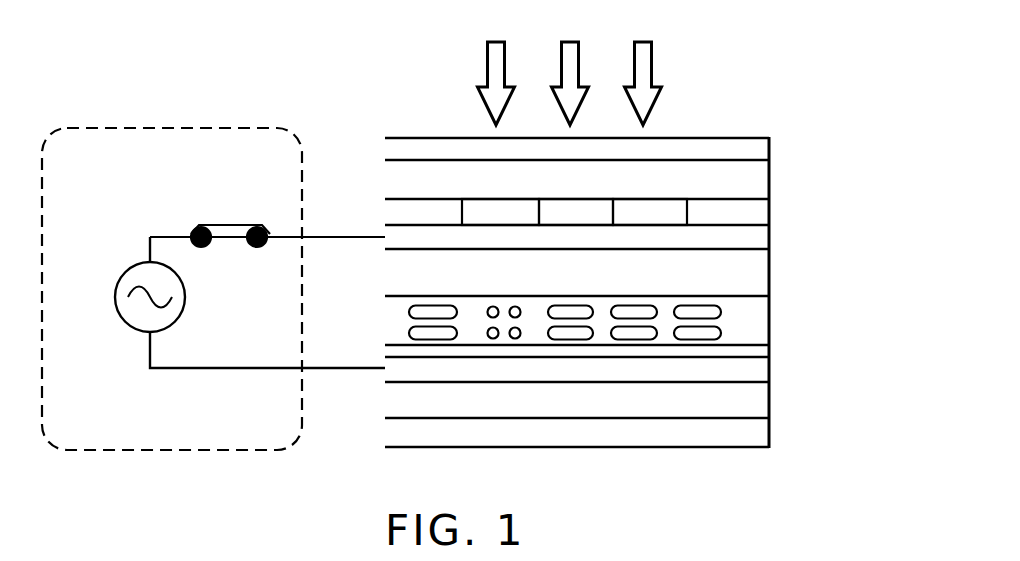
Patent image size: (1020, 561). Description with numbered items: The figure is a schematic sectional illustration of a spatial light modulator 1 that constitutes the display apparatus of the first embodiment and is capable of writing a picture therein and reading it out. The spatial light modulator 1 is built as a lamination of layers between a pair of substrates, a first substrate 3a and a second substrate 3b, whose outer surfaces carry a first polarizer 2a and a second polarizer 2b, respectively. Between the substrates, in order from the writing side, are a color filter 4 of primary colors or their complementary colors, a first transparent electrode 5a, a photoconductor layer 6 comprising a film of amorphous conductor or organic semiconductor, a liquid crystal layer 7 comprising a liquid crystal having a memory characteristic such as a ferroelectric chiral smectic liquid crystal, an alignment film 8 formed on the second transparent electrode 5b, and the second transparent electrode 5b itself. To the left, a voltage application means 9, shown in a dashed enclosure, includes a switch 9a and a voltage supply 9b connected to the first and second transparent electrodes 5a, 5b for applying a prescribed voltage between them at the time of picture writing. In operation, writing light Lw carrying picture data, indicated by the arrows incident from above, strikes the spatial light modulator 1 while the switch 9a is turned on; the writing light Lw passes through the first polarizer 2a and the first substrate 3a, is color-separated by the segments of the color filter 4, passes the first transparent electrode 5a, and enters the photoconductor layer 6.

The spatial light modulator 1 is at (763, 109).
The writing light Lw is at (653, 60).
The first polarizer 2a is at (769, 153).
The first substrate 3a is at (769, 186).
The color filter 4 is at (769, 217).
The first transparent electrode 5a is at (769, 248).
The photoconductor layer 6 is at (769, 277).
The liquid crystal layer 7 is at (769, 322).
The alignment film 8 is at (769, 357).
The second transparent electrode 5b is at (769, 375).
The second substrate 3b is at (769, 402).
The second polarizer 2b is at (769, 439).
The voltage application means 9 is at (200, 128).
The switch 9a is at (235, 225).
The voltage supply 9b is at (127, 326).